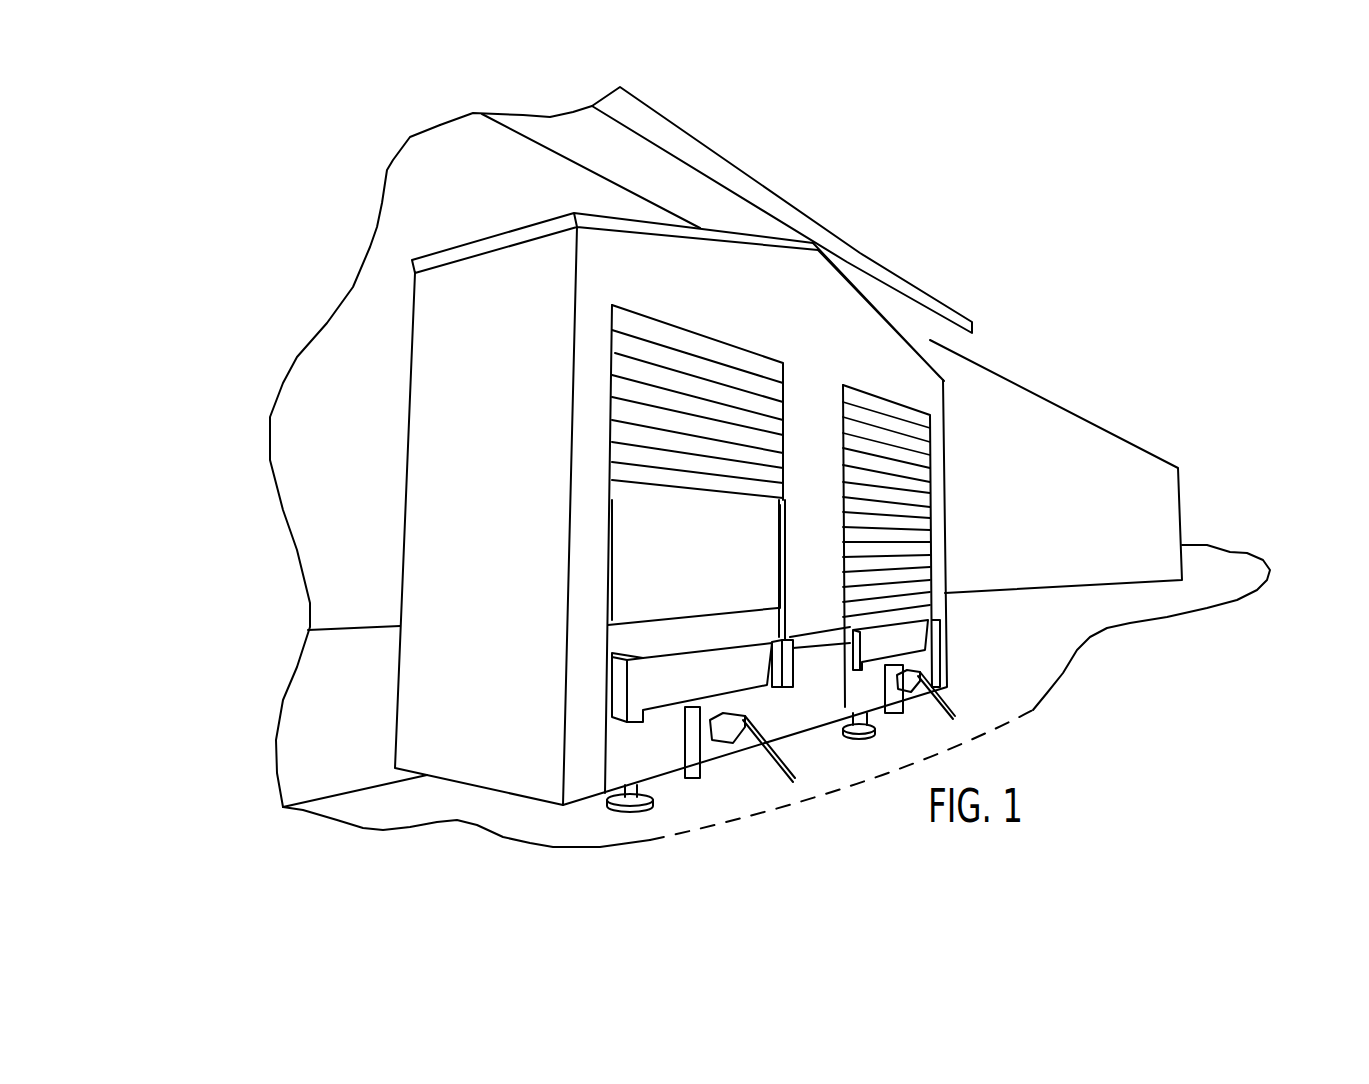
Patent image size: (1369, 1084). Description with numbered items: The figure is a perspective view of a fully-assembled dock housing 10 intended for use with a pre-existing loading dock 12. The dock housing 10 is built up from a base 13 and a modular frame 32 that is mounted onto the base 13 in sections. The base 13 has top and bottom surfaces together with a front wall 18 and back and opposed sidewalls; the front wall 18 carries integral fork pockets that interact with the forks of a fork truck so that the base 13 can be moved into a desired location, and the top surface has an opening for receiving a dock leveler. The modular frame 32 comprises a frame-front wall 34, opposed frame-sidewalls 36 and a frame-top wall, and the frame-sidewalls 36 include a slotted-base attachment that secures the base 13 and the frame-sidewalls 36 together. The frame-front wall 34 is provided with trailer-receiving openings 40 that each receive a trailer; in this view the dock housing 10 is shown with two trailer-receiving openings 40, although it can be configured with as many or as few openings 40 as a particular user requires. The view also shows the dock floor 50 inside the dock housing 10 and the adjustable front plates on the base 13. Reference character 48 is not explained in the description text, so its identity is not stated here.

The dock housing 10 is at (897, 127).
The loading dock 12 is at (662, 675).
The base 13 is at (692, 663).
The front wall 18 is at (928, 640).
The modular frame 32 is at (922, 393).
The frame-front wall 34 is at (868, 360).
The frame-sidewalls 36 is at (480, 495).
The trailer-receiving opening 40 is at (647, 552).
The door slats 48 is at (918, 500).
The dock floor 50 is at (703, 630).